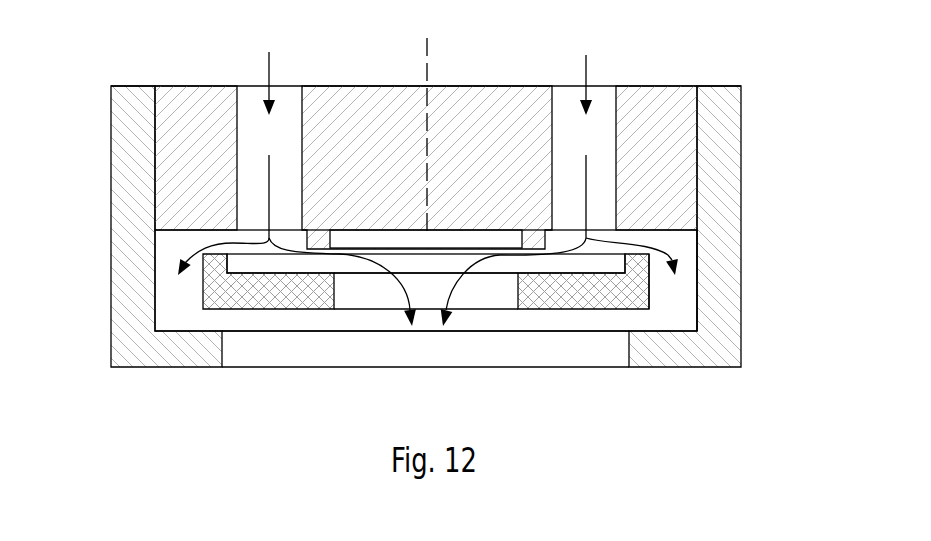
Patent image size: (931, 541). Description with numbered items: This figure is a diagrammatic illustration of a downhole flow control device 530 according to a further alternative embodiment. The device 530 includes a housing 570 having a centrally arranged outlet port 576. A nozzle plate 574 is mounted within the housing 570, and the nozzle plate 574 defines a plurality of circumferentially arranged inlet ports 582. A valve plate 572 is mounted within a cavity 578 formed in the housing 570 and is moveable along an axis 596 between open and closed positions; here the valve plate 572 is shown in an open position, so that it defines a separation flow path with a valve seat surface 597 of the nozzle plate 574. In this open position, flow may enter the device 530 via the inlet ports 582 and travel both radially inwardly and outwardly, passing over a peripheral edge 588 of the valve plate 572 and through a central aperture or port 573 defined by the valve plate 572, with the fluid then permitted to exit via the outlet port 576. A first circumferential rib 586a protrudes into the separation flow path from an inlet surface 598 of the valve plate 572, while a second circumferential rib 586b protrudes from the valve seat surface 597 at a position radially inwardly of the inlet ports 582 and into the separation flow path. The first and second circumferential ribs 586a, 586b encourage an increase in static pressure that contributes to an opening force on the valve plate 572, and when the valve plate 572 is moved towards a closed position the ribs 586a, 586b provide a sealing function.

The flow control device 530 is at (138, 56).
The housing 570 is at (722, 182).
The nozzle plate 574 is at (680, 100).
The inlet ports 582 is at (247, 98).
The first circumferential rib 586a is at (660, 244).
The second circumferential rib 586b is at (322, 243).
The axis 596 is at (427, 47).
The valve seat surface 597 is at (226, 236).
The inlet surface 598 is at (591, 238).
The peripheral edge 588 is at (203, 288).
The cavity 578 is at (168, 312).
The outlet port 576 is at (268, 348).
The central port 573 is at (495, 295).
The valve plate 572 is at (597, 292).